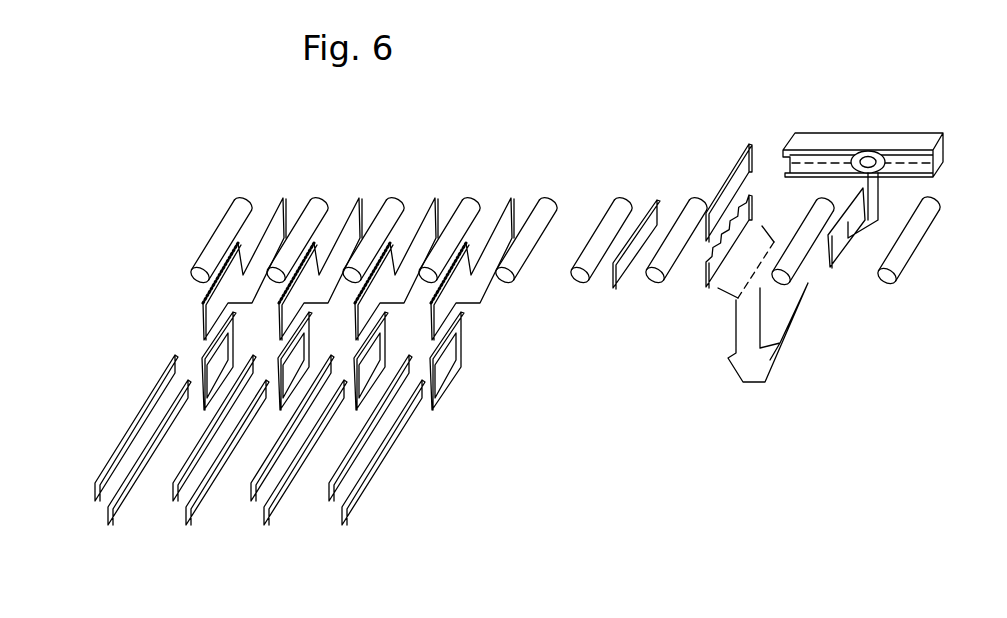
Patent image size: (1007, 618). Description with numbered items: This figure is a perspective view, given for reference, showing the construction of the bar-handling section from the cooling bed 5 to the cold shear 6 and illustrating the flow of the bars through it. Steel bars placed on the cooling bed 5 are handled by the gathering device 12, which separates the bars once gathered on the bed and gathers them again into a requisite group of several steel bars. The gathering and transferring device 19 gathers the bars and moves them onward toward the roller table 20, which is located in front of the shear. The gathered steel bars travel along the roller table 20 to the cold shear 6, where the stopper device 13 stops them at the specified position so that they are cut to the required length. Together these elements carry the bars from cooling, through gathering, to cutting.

The cooling bed 5 is at (398, 448).
The cold shear 6 is at (728, 144).
The gathering device 12 is at (457, 378).
The stopper device 13 is at (880, 192).
The gathering and transferring device 19 is at (517, 197).
The roller table 20 is at (557, 197).